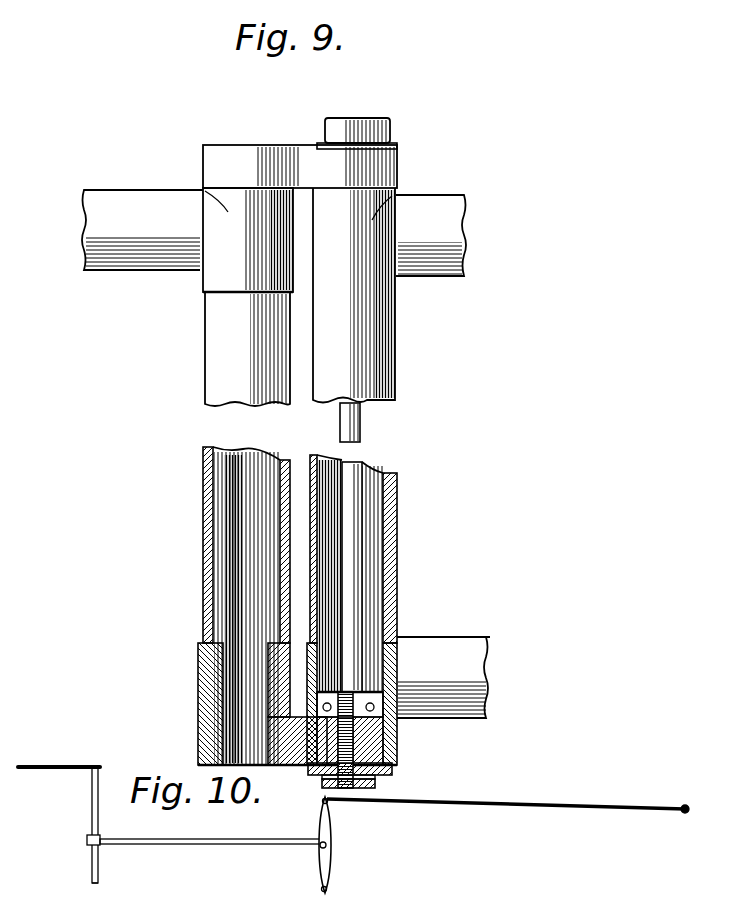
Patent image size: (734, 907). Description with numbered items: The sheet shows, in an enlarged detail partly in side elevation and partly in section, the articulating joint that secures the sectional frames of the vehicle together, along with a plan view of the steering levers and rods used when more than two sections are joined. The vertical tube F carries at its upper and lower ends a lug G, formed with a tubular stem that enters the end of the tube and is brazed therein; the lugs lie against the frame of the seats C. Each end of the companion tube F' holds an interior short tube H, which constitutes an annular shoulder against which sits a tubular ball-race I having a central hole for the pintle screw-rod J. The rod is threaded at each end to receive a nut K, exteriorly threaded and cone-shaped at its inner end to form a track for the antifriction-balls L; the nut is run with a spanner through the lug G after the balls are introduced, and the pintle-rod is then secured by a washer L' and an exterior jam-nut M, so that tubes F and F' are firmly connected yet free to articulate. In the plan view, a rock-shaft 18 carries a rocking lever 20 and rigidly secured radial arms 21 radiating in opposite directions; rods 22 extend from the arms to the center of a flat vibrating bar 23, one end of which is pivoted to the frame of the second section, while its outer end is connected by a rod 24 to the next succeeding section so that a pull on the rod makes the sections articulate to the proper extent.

In FIG. 9, the seat frame C is at (198, 725).
In FIG. 9, the lug G is at (415, 752).
In FIG. 9, the vertical tube F is at (221, 476).
In FIG. 9, the vertical tube F' is at (369, 440).
In FIG. 9, the pintle screw-rod J is at (360, 436).
In FIG. 9, the tubular ball-race I is at (393, 722).
In FIG. 9, the nut K is at (390, 768).
In FIG. 9, the washer L' is at (379, 469).
In FIG. 9, the jam-nut M is at (391, 128).
In FIG. 9, the antifriction-balls L is at (440, 677).
In FIG. 9, the interior short tube H is at (443, 620).
In FIG. 10, the rock-shaft 18 is at (90, 875).
In FIG. 10, the rocking lever 20 is at (59, 813).
In FIG. 10, the radial arm 21 is at (89, 836).
In FIG. 10, the rod 22 is at (210, 829).
In FIG. 10, the flat bar 23 is at (340, 845).
In FIG. 10, the rod 24 is at (508, 819).